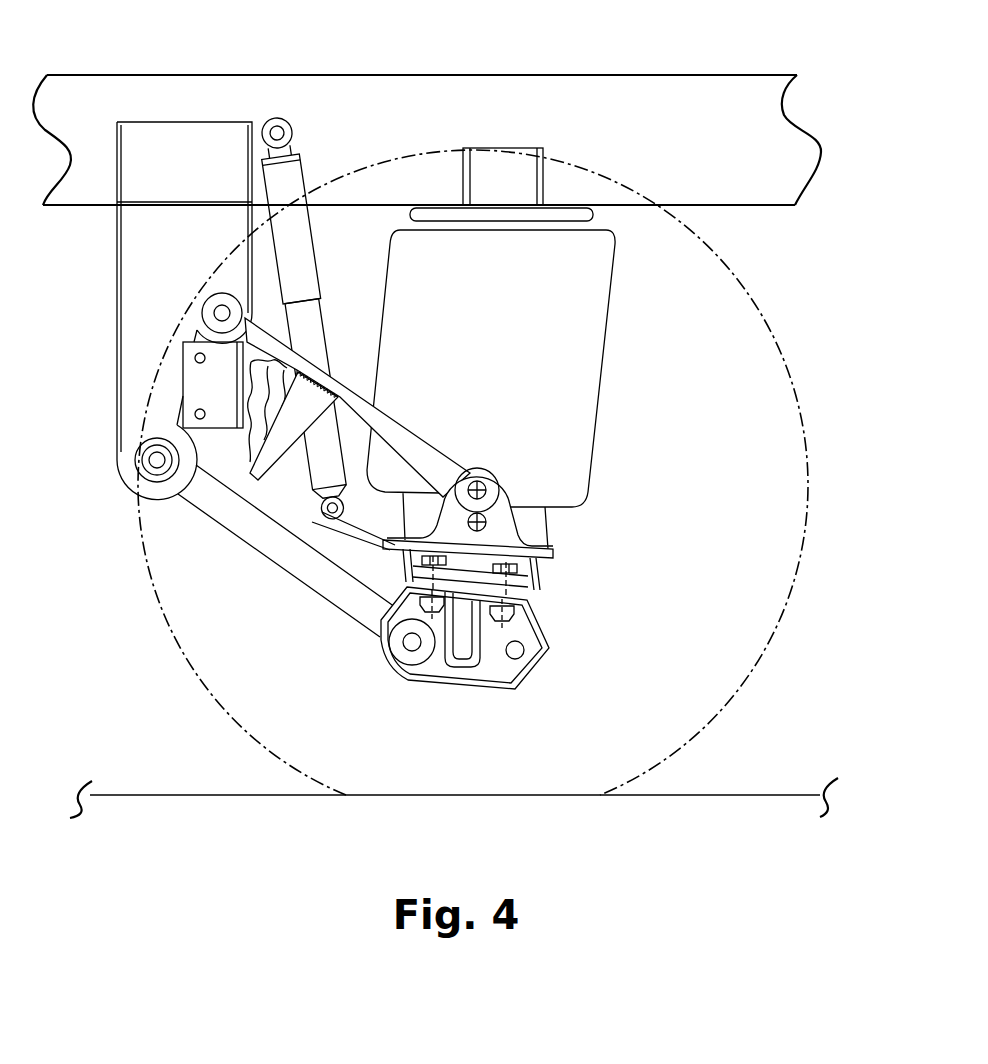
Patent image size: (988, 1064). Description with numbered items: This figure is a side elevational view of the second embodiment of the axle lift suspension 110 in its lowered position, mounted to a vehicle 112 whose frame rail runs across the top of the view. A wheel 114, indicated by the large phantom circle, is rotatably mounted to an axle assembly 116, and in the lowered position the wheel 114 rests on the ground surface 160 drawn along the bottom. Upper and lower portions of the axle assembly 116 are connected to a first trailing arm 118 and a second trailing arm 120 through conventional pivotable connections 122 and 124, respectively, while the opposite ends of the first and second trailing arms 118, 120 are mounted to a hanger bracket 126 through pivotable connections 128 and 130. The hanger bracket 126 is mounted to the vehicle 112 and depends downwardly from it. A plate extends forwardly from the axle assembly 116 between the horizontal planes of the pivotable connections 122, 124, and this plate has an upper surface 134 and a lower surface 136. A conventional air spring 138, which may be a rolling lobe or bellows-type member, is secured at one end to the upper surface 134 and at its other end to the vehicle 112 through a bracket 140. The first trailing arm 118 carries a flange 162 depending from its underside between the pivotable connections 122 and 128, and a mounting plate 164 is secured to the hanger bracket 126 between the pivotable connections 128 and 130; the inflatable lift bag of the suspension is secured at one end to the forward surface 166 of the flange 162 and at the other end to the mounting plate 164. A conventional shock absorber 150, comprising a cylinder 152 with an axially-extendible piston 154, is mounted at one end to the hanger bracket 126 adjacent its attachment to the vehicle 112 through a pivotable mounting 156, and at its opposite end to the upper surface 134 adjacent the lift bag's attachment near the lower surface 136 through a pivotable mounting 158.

The axle lift suspension 110 is at (58, 623).
The vehicle 112 is at (637, 70).
The wheel 114 is at (762, 303).
The axle assembly 116 is at (578, 588).
The first trailing arm 118 is at (422, 451).
The second trailing arm 120 is at (285, 550).
The pivotable connection 122 is at (490, 482).
The pivotable connection 124 is at (417, 646).
The hanger bracket 126 is at (113, 269).
The pivotable connection 128 is at (214, 304).
The pivotable connection 130 is at (160, 470).
The upper surface 134 is at (556, 546).
The lower surface 136 is at (383, 540).
The air spring 138 is at (580, 339).
The bracket 140 is at (546, 182).
The shock absorber 150 is at (327, 313).
The cylinder 152 is at (304, 178).
The piston 154 is at (316, 333).
The pivotable mounting 156 is at (292, 131).
The pivotable mounting 158 is at (321, 504).
The ground surface 160 is at (745, 793).
The flange 162 is at (292, 430).
The mounting plate 164 is at (205, 388).
The forward surface 166 is at (297, 371).